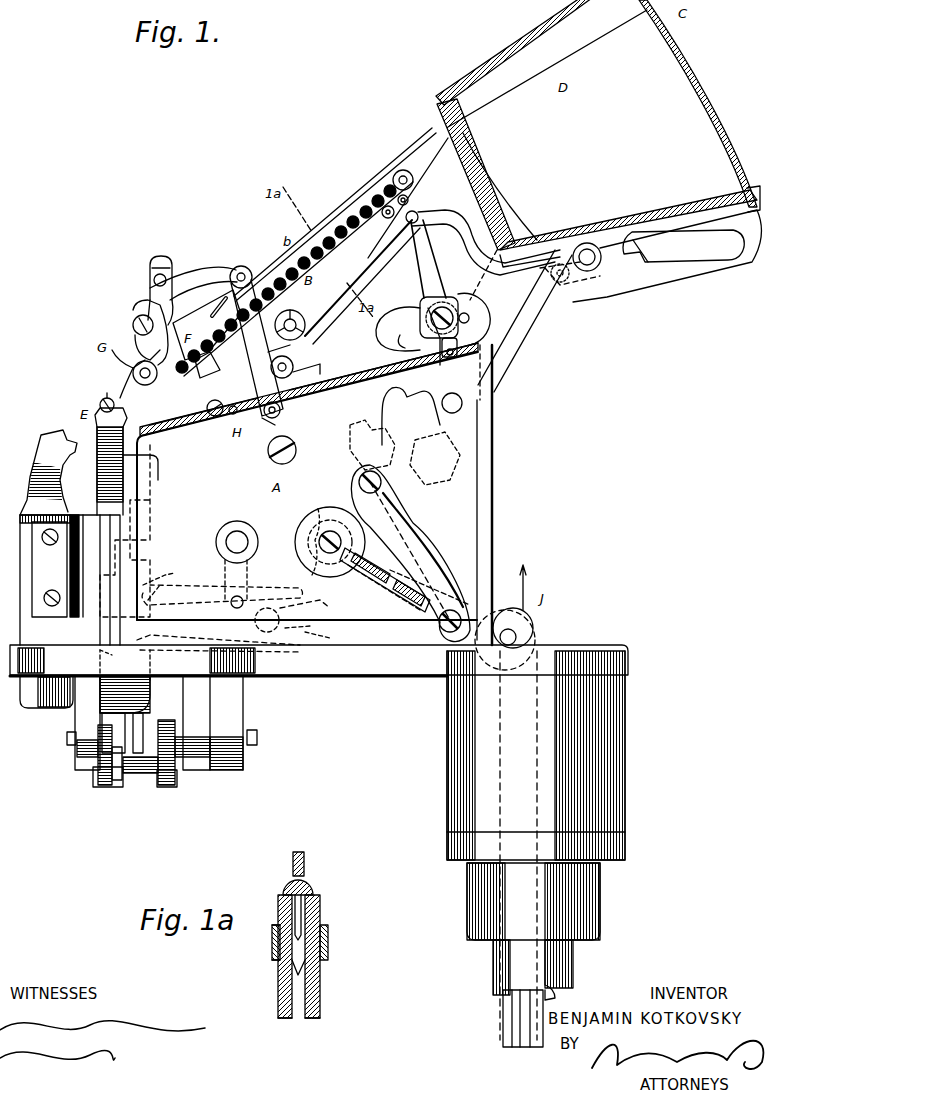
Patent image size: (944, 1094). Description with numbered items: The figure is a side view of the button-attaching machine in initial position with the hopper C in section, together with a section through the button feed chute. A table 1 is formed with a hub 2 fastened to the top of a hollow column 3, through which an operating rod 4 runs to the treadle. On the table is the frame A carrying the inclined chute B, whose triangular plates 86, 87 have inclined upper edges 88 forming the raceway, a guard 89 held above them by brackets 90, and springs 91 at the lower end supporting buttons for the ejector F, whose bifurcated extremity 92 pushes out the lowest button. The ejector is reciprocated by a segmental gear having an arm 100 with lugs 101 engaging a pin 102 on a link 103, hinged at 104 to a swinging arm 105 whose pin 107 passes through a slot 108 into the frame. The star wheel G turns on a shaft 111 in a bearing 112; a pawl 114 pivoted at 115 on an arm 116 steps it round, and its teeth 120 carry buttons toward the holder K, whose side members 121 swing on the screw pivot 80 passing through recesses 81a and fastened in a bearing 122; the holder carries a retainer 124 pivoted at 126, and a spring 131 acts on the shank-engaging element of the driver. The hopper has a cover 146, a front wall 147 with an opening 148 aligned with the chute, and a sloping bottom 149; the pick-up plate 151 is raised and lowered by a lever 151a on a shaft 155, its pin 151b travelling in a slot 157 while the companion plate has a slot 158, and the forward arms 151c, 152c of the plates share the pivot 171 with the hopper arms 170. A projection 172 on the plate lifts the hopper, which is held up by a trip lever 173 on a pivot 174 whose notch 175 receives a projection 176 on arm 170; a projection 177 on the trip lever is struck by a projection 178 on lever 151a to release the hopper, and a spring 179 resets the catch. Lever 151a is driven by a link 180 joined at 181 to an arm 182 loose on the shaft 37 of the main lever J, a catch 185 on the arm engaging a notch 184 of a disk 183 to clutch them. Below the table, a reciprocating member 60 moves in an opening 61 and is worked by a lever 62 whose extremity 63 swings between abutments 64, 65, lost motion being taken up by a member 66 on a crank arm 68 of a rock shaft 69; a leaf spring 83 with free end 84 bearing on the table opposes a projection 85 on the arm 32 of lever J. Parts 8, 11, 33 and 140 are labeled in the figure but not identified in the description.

In FIG. 1, the table 1 is at (372, 673).
In FIG. 1, the hub 2 is at (448, 800).
In FIG. 1, the hollow standard or column 3 is at (493, 966).
In FIG. 1, the operating rod 4 is at (504, 1018).
In FIG. 1, the bracket 11 is at (95, 552).
In FIG. 1, the arm 32 is at (498, 612).
In FIG. 1, the drive mechanism 33 is at (138, 732).
In FIG. 1, the shaft or axis of lever J 37 is at (315, 510).
In FIG. 1, the vertically reciprocating member 60 is at (118, 685).
In FIG. 1, the opening 61 is at (98, 658).
In FIG. 1, the medially fulcrumed lever 62 is at (298, 604).
In FIG. 1, the extremity of lever 63 is at (170, 590).
In FIG. 1, the abutment 64 is at (150, 643).
In FIG. 1, the abutment 65 is at (160, 584).
In FIG. 1, the lost motion take-up member 66 is at (232, 598).
In FIG. 1, the crank arm 68 is at (225, 578).
In FIG. 1, the rock shaft 69 is at (237, 522).
In FIG. 1, the screw pivot 80 is at (310, 378).
In FIG. 1, the recesses 81a is at (310, 376).
In FIG. 1, the leaf spring 83 is at (345, 645).
In FIG. 1, the free end of leaf spring 84 is at (310, 645).
In FIG. 1, the projection 85 is at (435, 560).
In FIG. 1, the triangular plate 86 is at (372, 205).
In FIG. 1A, the triangular plate 86 is at (320, 1003).
In FIG. 1, the guard 89 is at (330, 228).
In FIG. 1, the brackets 90 is at (400, 172).
In FIG. 1, the springs 91 is at (208, 368).
In FIG. 1, the bifurcated lower extremity 92 is at (170, 440).
In FIG. 1, the arm 100 is at (150, 305).
In FIG. 1, the parallel lugs 101 is at (160, 257).
In FIG. 1, the pin 102 is at (154, 279).
In FIG. 1, the reciprocating actuating element or link 103 is at (203, 276).
In FIG. 1, the hinge connection 104 is at (246, 262).
In FIG. 1, the swinging arm 105 is at (270, 350).
In FIG. 1, the pin 107 is at (282, 410).
In FIG. 1, the slot 108 is at (268, 452).
In FIG. 1, the shaft 111 is at (132, 373).
In FIG. 1, the bearing 112 is at (135, 410).
In FIG. 1, the pawl 114 is at (180, 322).
In FIG. 1, the pivot 115 is at (133, 312).
In FIG. 1, the pawl-carrying arm 116 is at (133, 325).
In FIG. 1, the teeth or arms of star wheel 120 is at (122, 390).
In FIG. 1, the side members 121 is at (235, 398).
In FIG. 1, the bearing 122 is at (292, 363).
In FIG. 1, the button retainer or guide 124 is at (100, 403).
In FIG. 1, the pivot 126 is at (92, 415).
In FIG. 1, the spring 131 is at (470, 318).
In FIG. 1A, the nut 140 is at (272, 950).
In FIG. 1, the cover 146 is at (510, 50).
In FIG. 1, the front wall 147 is at (495, 172).
In FIG. 1, the opening 148 is at (468, 125).
In FIG. 1, the bottom 149 is at (632, 215).
In FIG. 1, the vertically sliding plate 151 is at (640, 272).
In FIG. 1, the lever 151a is at (530, 325).
In FIG. 1, the pin 151b is at (582, 268).
In FIG. 1A, the forwardly-extending arm 151c is at (320, 982).
In FIG. 1A, the forwardly-extending arm 152c is at (280, 975).
In FIG. 1, the horizontal shaft 155 is at (463, 402).
In FIG. 1, the slot 157 is at (642, 242).
In FIG. 1, the slot 158 is at (642, 256).
In FIG. 1, the forwardly-extending arms 170 is at (372, 262).
In FIG. 1A, the forwardly-extending arms 170 is at (329, 945).
In FIG. 1, the horizontal pivot 171 is at (306, 328).
In FIG. 1, the projection 172 is at (515, 262).
In FIG. 1, the trip lever 173 is at (440, 285).
In FIG. 1, the pivot 174 is at (460, 310).
In FIG. 1, the notch 175 is at (398, 230).
In FIG. 1, the projection 176 is at (418, 213).
In FIG. 1, the projection 177 is at (446, 360).
In FIG. 1, the projection 178 is at (388, 397).
In FIG. 1, the spring 179 is at (410, 335).
In FIG. 1, the link 180 is at (410, 530).
In FIG. 1, the connection 181 is at (447, 633).
In FIG. 1, the arm 182 is at (352, 575).
In FIG. 1, the disk 183 is at (310, 545).
In FIG. 1, the notch 184 is at (375, 494).
In FIG. 1, the catch 185 is at (395, 578).
In FIG. 1A, the pin 8 is at (305, 862).
In FIG. 1A, the triangular plate 87 is at (278, 1010).
In FIG. 1A, the inclined upper edges 88 is at (313, 898).